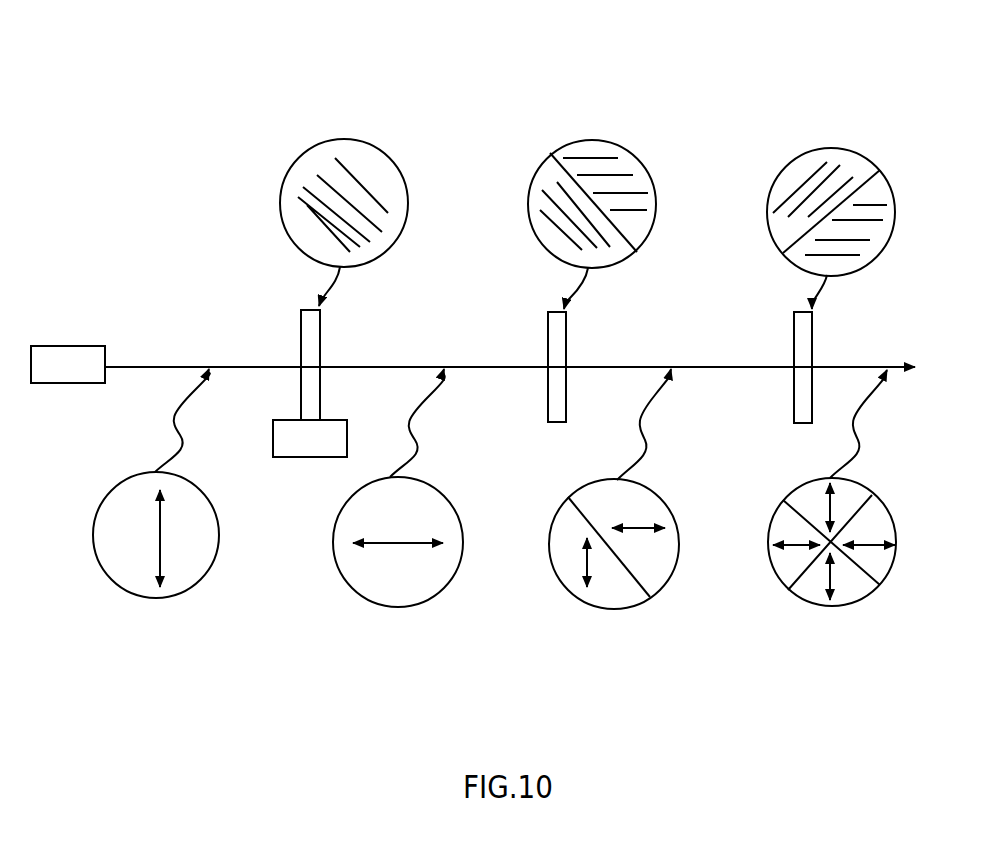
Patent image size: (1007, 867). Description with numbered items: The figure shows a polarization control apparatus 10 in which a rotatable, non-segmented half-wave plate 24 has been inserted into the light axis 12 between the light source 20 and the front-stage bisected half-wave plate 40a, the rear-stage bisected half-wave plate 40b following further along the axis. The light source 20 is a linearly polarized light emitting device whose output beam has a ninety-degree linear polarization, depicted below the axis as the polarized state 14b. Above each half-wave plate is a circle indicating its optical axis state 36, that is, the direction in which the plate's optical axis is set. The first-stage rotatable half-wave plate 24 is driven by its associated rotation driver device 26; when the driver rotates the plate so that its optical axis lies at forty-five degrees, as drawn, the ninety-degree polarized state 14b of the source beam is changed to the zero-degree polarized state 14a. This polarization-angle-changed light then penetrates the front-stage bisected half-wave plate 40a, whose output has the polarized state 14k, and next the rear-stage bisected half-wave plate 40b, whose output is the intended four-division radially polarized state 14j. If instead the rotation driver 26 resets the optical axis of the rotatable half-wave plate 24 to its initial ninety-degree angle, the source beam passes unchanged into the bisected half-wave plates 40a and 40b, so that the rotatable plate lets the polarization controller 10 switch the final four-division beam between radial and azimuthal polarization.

The polarization control apparatus 10 is at (498, 105).
The light axis 12 is at (358, 365).
The light source 20 is at (77, 346).
The rotatable λ/2 plate 24 is at (301, 337).
The rotation driver device 26 is at (315, 458).
The optical axis state 36 is at (338, 140).
The front-stage bisected λ/2 plate 40a is at (547, 343).
The rear-stage bisected λ/2 plate 40b is at (791, 329).
The zero-degree polarized state 14a is at (390, 607).
The 90-degree polarized state 14b is at (155, 598).
The polarized state after front-stage plate 14k is at (617, 608).
The four-division radially polarized state 14j is at (848, 605).